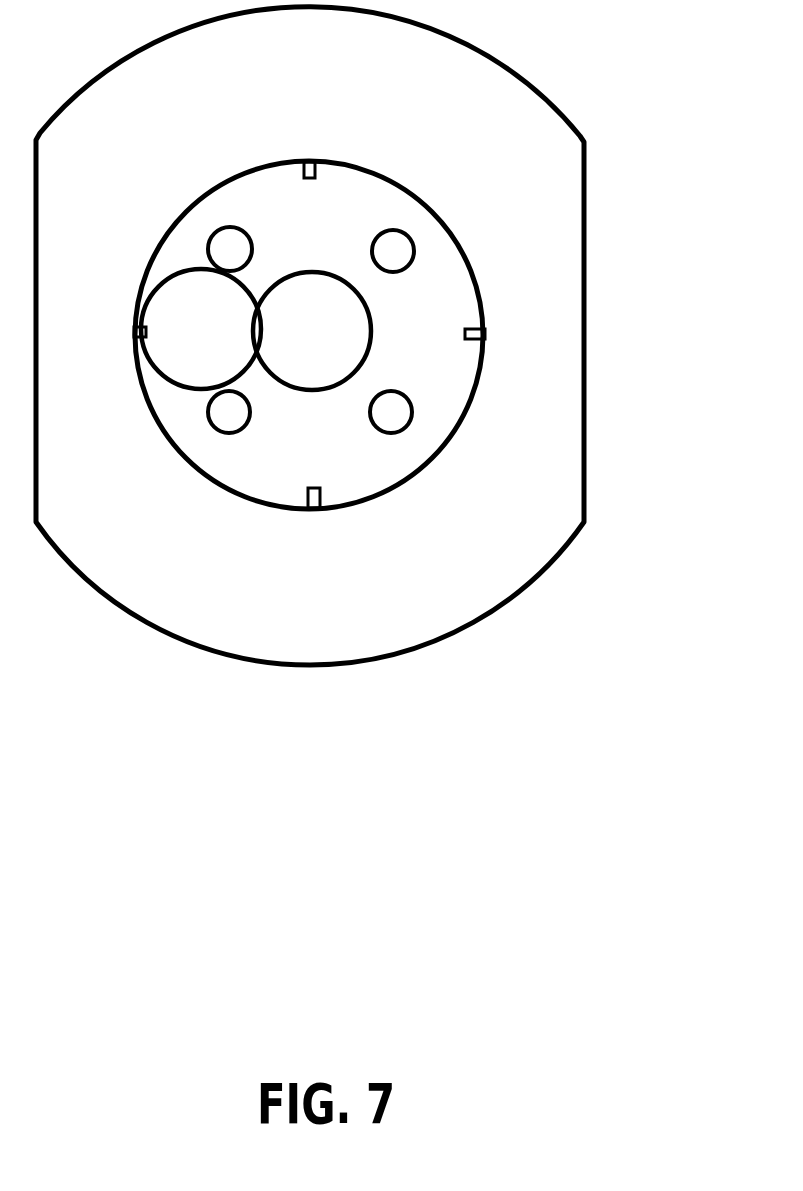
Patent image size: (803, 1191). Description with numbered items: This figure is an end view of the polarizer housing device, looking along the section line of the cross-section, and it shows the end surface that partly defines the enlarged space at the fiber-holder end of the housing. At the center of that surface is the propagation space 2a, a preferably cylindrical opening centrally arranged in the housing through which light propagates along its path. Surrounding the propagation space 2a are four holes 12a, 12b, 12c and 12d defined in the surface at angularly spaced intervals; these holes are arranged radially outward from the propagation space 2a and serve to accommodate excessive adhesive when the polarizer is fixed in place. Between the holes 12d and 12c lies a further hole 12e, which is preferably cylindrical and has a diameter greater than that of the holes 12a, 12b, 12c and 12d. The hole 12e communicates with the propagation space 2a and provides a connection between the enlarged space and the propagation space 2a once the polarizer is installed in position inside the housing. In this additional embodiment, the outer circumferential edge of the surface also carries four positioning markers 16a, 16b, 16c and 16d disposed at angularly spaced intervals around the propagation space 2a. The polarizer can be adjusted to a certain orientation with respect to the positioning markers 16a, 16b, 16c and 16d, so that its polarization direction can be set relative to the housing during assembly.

The propagation space 2a is at (353, 315).
The hole 12a is at (405, 232).
The hole 12b is at (407, 426).
The hole 12c is at (229, 434).
The hole 12d is at (230, 227).
The hole 12e is at (185, 391).
The positioning marker 16a is at (318, 166).
The positioning marker 16b is at (481, 340).
The positioning marker 16c is at (322, 500).
The positioning marker 16d is at (137, 332).